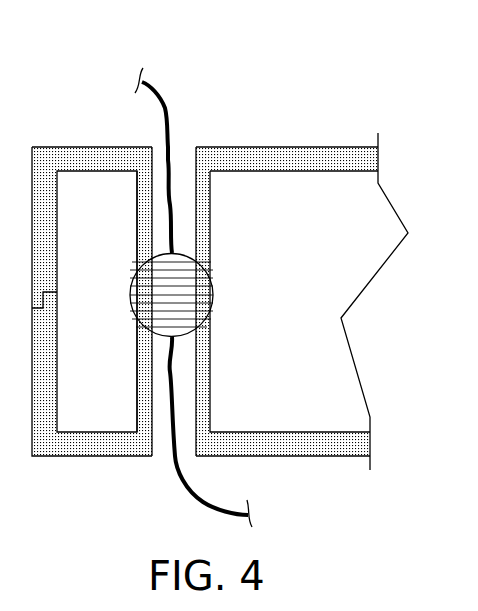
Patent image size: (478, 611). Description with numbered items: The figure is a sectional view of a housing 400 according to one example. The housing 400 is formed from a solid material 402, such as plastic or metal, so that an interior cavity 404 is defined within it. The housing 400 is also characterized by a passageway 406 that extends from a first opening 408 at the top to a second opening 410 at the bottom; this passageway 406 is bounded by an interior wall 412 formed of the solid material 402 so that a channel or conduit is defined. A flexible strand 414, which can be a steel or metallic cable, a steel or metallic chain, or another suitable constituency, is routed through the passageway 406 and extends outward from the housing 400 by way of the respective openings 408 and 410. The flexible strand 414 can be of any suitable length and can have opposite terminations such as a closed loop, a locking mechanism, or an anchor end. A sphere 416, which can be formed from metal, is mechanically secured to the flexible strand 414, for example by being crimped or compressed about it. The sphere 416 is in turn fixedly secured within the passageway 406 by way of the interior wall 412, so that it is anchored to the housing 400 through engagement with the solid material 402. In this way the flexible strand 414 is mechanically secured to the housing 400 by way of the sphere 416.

The housing 400 is at (325, 45).
The solid material 402 is at (313, 147).
The interior cavity 404 is at (315, 256).
The passageway 406 is at (182, 167).
The first opening 408 is at (157, 146).
The second opening 410 is at (155, 457).
The interior wall 412 is at (150, 395).
The flexible strand 414 is at (162, 93).
The sphere 416 is at (213, 295).